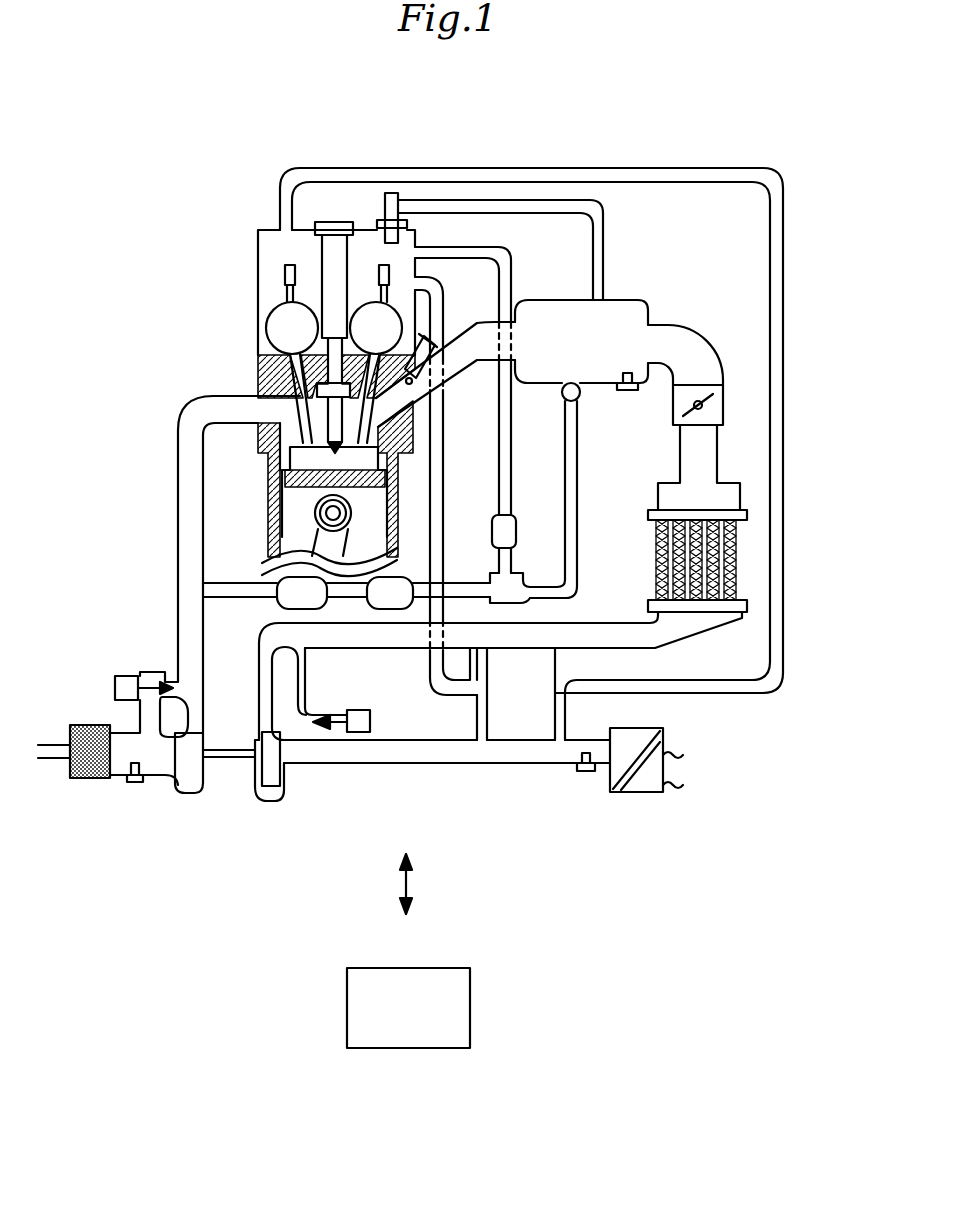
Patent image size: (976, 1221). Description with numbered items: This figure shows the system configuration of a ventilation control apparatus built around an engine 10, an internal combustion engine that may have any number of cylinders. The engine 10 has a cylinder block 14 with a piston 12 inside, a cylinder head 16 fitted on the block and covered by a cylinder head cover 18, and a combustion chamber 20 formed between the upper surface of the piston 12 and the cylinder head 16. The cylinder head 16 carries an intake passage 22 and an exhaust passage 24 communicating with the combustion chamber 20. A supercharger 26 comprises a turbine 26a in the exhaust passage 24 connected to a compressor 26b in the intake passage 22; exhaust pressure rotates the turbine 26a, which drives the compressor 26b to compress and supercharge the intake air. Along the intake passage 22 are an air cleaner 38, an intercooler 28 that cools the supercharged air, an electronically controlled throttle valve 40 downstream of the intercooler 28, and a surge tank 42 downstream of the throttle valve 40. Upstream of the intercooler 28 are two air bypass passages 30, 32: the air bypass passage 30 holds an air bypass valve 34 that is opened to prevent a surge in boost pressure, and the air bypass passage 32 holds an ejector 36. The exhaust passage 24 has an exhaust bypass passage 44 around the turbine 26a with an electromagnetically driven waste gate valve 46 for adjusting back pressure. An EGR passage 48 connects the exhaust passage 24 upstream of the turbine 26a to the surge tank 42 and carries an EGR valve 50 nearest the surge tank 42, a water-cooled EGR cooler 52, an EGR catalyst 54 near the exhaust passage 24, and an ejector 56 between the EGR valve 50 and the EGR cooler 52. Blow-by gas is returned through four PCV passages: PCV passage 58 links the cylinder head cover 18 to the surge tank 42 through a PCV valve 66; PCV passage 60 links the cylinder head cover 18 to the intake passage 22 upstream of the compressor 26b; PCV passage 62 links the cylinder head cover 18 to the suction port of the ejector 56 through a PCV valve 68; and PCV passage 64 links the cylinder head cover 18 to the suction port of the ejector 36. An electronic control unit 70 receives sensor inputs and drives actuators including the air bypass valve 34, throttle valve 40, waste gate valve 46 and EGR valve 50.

The engine 10 is at (258, 530).
The piston 12 is at (283, 503).
The cylinder block 14 is at (388, 476).
The cylinder head 16 is at (258, 375).
The cylinder head cover 18 is at (262, 230).
The combustion chamber 20 is at (269, 474).
The intake passage 22 is at (430, 797).
The exhaust passage 24 is at (178, 497).
The supercharger 26 is at (225, 797).
The turbine 26a is at (190, 790).
The compressor 26b is at (264, 791).
The intercooler 28 is at (655, 548).
The air bypass passage 30 is at (306, 676).
The air bypass passage 32 is at (488, 724).
The air bypass valve 34 is at (370, 722).
The ejector 36 is at (488, 660).
The air cleaner 38 is at (636, 792).
The throttle valve 40 is at (673, 412).
The surge tank 42 is at (628, 300).
The exhaust bypass passage 44 is at (135, 710).
The waste gate valve 46 is at (120, 676).
The EGR passage 48 is at (236, 672).
The EGR valve 50 is at (563, 398).
The EGR cooler 52 is at (403, 577).
The EGR catalyst 54 is at (290, 609).
The ejector 56 is at (528, 588).
The PCV passage 58 is at (604, 210).
The PCV passage 60 is at (328, 140).
The PCV passage 62 is at (511, 476).
The PCV passage 64 is at (415, 672).
The PCV valve 66 is at (393, 193).
The PCV valve 68 is at (516, 525).
The electronic control unit 70 is at (503, 1010).